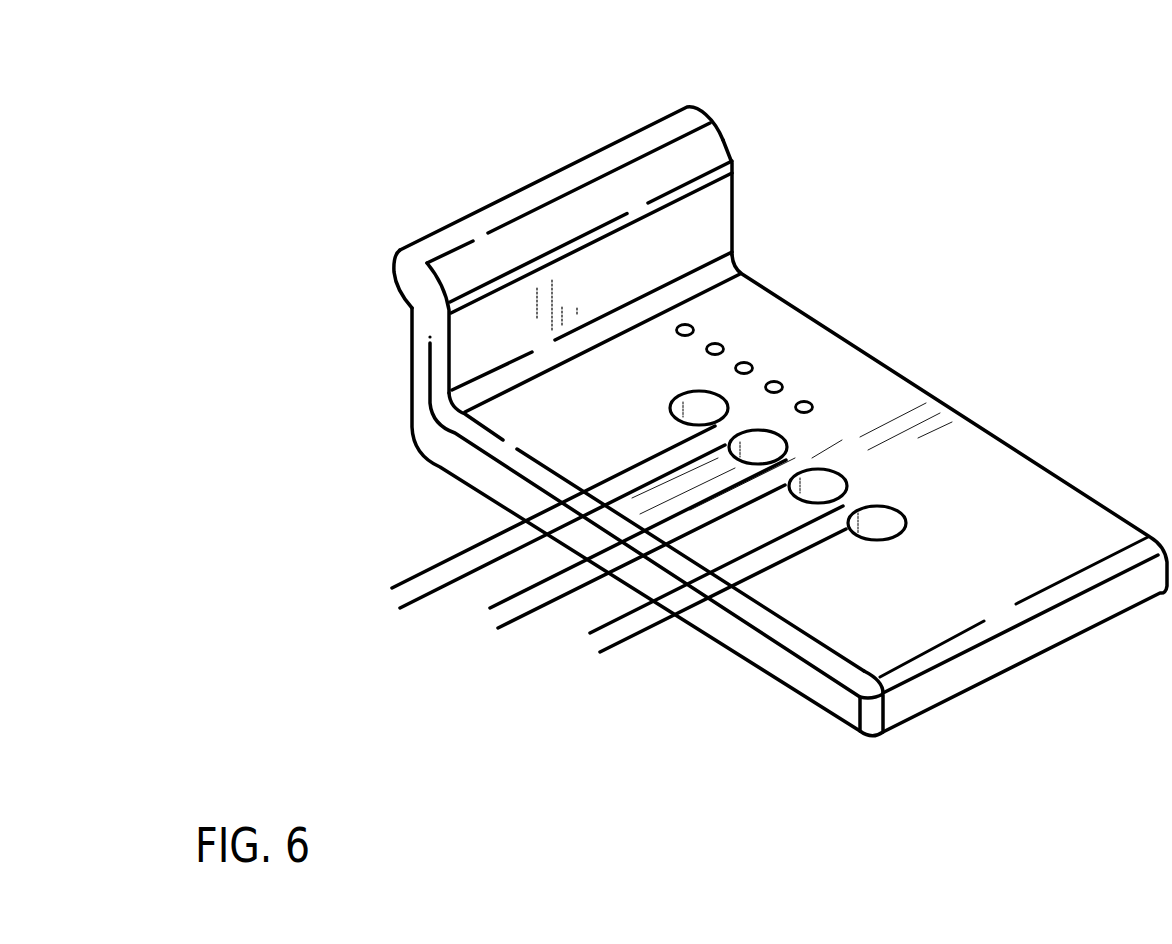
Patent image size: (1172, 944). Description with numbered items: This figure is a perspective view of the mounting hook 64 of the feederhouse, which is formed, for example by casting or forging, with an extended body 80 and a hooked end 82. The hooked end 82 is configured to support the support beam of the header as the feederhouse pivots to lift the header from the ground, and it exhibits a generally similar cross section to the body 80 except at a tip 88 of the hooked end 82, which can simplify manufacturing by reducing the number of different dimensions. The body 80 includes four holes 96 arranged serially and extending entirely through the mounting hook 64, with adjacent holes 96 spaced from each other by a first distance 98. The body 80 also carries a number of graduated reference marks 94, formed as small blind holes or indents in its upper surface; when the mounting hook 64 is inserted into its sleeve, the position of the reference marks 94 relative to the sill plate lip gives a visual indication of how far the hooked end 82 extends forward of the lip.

The mounting hook 64 is at (356, 194).
The body 80 is at (931, 367).
The hooked end 82 is at (758, 184).
The tip 88 is at (587, 153).
The graduated reference marks 94 is at (689, 326).
The holes 96 is at (728, 414).
The first distance 98 is at (406, 550).